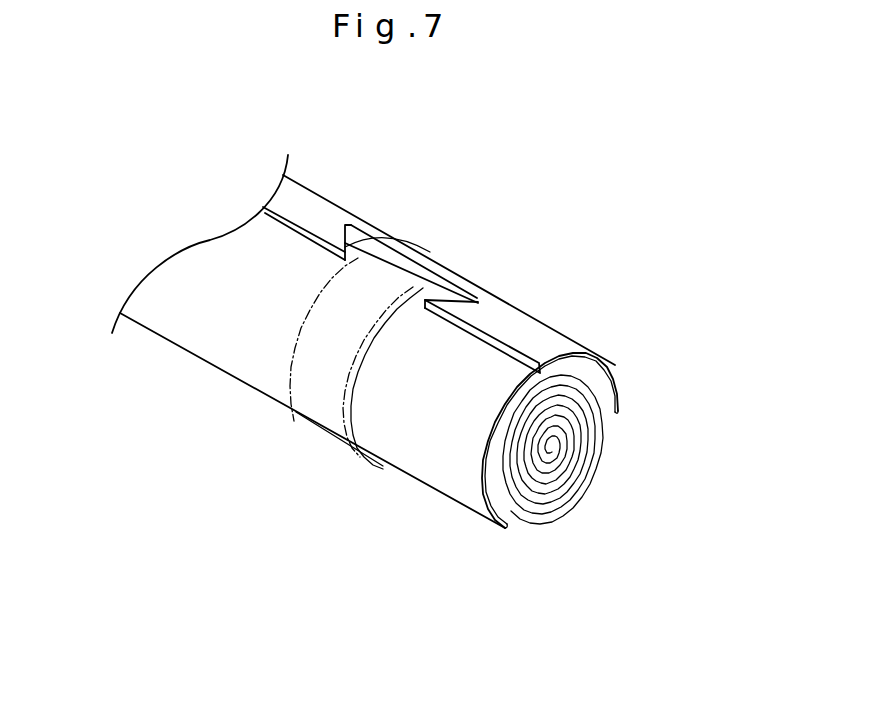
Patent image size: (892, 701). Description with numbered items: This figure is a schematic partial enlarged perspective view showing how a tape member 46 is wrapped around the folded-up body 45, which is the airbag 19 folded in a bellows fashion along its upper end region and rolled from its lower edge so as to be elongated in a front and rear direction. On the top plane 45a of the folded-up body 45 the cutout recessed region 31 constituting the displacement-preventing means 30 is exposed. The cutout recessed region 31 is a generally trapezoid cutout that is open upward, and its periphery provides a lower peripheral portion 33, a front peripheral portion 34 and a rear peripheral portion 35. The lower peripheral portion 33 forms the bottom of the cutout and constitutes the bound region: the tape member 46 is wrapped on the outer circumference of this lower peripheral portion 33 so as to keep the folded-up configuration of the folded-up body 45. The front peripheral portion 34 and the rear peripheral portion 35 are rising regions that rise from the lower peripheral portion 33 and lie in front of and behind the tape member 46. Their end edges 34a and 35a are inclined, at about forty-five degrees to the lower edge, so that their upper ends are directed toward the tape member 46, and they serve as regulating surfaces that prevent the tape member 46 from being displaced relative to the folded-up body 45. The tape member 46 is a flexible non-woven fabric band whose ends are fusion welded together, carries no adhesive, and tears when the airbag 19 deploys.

The displacement-preventing means 30 is at (417, 311).
The cutout recessed region 31 is at (352, 238).
The lower peripheral portion 33 is at (412, 268).
The front peripheral portion 34 is at (456, 312).
The end edge of the front peripheral portion 34a is at (458, 284).
The rear peripheral portion 35 is at (338, 240).
The end edge of the rear peripheral portion 35a is at (365, 236).
The folded-up body 45 is at (566, 482).
The airbag 19 is at (568, 517).
The top plane of the folded-up body 45a is at (522, 335).
The tape member 46 is at (304, 392).